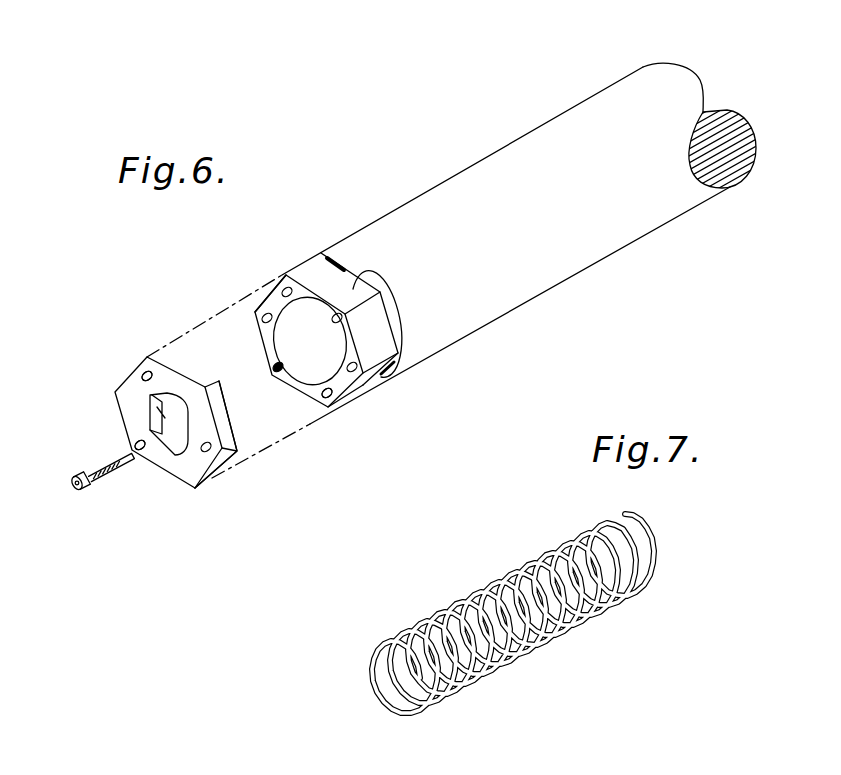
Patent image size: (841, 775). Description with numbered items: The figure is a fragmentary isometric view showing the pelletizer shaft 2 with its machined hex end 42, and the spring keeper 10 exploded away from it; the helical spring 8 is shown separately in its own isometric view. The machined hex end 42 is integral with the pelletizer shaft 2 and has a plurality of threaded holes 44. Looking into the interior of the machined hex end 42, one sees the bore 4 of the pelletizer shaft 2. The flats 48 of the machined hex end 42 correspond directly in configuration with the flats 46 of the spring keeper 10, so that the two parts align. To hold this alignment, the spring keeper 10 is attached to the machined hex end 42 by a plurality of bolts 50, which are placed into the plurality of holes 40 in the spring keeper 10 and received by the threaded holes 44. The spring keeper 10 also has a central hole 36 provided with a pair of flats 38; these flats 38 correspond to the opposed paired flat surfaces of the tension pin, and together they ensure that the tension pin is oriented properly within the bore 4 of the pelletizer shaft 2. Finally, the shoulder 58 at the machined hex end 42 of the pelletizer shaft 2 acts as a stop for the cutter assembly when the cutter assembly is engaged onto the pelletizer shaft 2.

In FIG. 6, the pelletizer shaft 2 is at (546, 224).
In FIG. 6, the bore 4 is at (315, 347).
In FIG. 7, the coil spring 8 is at (492, 578).
In FIG. 6, the spring keeper 10 is at (175, 393).
In FIG. 6, the hole 36 is at (175, 430).
In FIG. 6, the pair of flats 38 is at (160, 413).
In FIG. 6, the holes 40 is at (135, 385).
In FIG. 6, the machined hex end 42 is at (307, 282).
In FIG. 6, the threaded holes 44 is at (327, 393).
In FIG. 6, the flats 46 is at (233, 438).
In FIG. 6, the flats 48 is at (373, 330).
In FIG. 6, the bolts 50 is at (98, 485).
In FIG. 6, the shoulder 58 is at (320, 257).